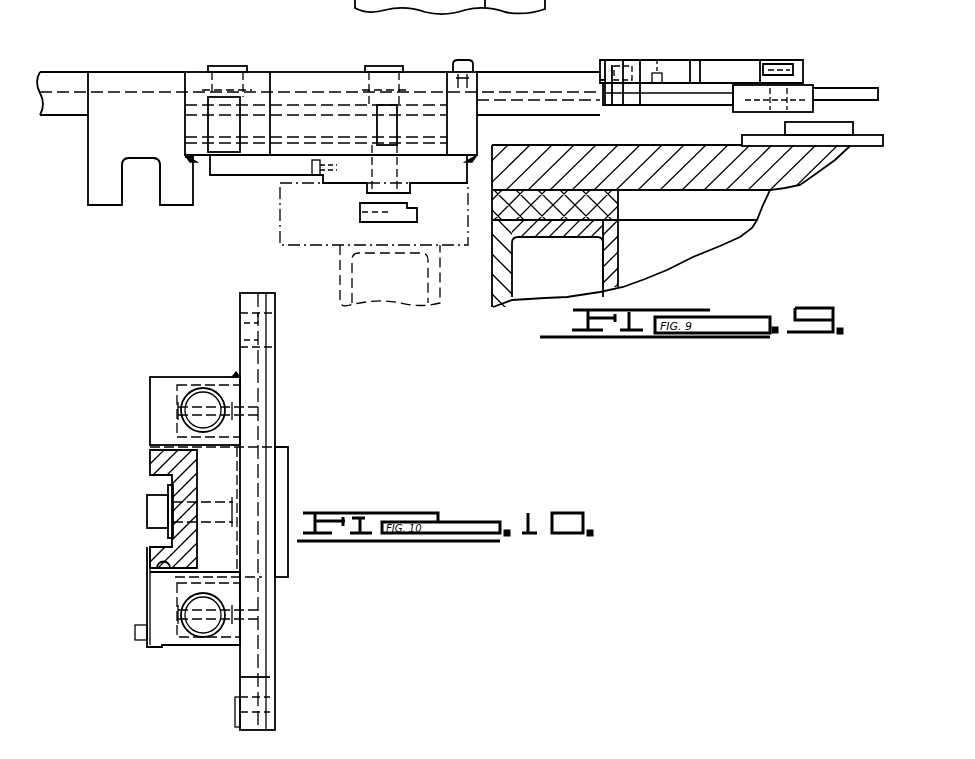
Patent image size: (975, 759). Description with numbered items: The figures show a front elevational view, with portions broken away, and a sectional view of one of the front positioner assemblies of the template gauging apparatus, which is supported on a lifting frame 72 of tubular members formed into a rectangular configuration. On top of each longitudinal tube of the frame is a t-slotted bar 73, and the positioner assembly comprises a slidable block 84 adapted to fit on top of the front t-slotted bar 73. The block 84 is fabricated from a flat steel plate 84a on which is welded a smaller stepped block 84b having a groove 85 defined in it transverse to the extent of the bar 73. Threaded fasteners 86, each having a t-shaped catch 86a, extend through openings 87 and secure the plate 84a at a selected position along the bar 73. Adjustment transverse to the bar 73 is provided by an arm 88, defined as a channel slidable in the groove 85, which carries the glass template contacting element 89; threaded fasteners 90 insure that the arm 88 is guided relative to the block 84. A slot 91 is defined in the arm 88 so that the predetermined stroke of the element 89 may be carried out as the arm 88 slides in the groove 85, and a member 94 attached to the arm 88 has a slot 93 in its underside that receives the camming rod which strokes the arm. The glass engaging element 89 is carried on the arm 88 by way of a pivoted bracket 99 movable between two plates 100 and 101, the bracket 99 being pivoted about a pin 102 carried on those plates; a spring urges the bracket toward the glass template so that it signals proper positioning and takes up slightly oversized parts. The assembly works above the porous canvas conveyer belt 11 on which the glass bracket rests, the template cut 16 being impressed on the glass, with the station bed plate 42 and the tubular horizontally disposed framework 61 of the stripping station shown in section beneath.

In FIG. 9, the porous canvas conveyer belt 11 is at (848, 143).
In FIG. 9, the compound template cut 16 is at (852, 128).
In FIG. 9, the station bed plate 42 is at (792, 168).
In FIG. 9, the tubular horizontally disposed framework 61 is at (618, 270).
In FIG. 9, the lifting frame 72 is at (433, 310).
In FIG. 9, the t-slotted bar 73 is at (281, 231).
In FIG. 9, the slidable block 84 is at (257, 165).
In FIG. 10, the slidable block 84 is at (160, 376).
In FIG. 10, the flat steel plate 84a is at (270, 383).
In FIG. 10, the stepped block 84b is at (195, 385).
In FIG. 10, the groove 85 is at (160, 565).
In FIG. 9, the threaded fasteners 86 is at (400, 62).
In FIG. 9, the t-shaped catch 86a is at (362, 210).
In FIG. 10, the openings 87 is at (247, 323).
In FIG. 9, the arm 88 is at (520, 78).
In FIG. 10, the arm 88 is at (150, 470).
In FIG. 9, the glass template contacting element 89 is at (810, 88).
In FIG. 9, the threaded fasteners 90 is at (226, 63).
In FIG. 10, the threaded fasteners 90 is at (150, 522).
In FIG. 10, the slot 91 is at (167, 511).
In FIG. 9, the slot 93 is at (158, 182).
In FIG. 9, the member 94 is at (102, 143).
In FIG. 9, the pivoted bracket 99 is at (715, 77).
In FIG. 9, the plate 100 is at (680, 100).
In FIG. 9, the plate 101 is at (677, 63).
In FIG. 9, the pin 102 is at (657, 70).